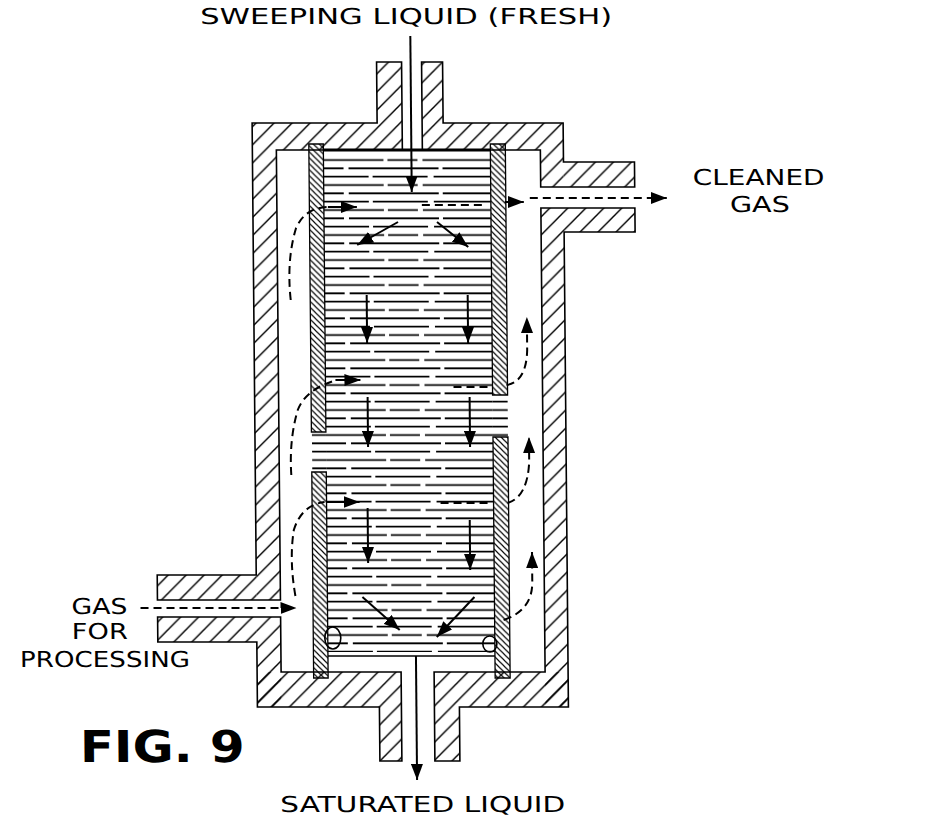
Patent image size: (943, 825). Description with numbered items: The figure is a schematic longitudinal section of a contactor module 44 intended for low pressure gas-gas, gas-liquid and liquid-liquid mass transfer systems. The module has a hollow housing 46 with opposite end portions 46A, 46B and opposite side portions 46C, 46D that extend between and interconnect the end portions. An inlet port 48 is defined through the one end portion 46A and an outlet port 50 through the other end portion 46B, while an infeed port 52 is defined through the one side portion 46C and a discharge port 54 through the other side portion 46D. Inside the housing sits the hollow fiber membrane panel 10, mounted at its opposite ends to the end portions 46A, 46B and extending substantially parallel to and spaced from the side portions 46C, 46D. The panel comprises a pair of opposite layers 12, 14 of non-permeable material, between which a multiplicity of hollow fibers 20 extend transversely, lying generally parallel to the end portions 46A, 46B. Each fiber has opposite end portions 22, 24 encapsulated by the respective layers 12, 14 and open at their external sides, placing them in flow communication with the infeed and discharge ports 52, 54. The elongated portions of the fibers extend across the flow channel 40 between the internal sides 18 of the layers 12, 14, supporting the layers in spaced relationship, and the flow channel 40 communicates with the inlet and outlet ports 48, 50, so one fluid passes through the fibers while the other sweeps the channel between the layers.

The hollow fiber membrane panel 10 is at (512, 290).
The layer of non-permeable material 12 is at (502, 146).
The layer of non-permeable material 14 is at (310, 146).
The internal side 18 is at (487, 648).
The hollow fiber 20 is at (354, 267).
The end portion of hollow fiber 22 is at (500, 412).
The end portion of hollow fiber 24 is at (315, 458).
The flow channel 40 is at (455, 667).
The contactor module 44 is at (608, 121).
The hollow housing 46 is at (561, 368).
The end portion of housing 46A is at (467, 123).
The end portion of housing 46B is at (489, 707).
The side portion of housing 46C is at (250, 412).
The side portion of housing 46D is at (562, 522).
The inlet port 48 is at (376, 98).
The outlet port 50 is at (373, 748).
The infeed port 52 is at (167, 575).
The discharge port 54 is at (603, 232).